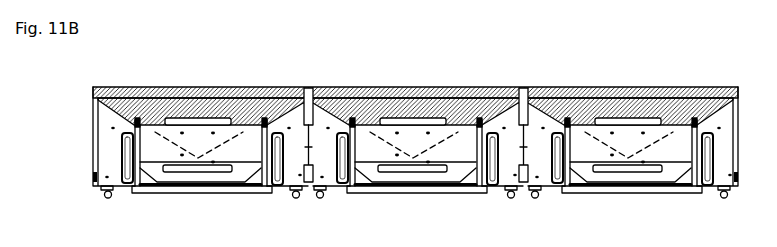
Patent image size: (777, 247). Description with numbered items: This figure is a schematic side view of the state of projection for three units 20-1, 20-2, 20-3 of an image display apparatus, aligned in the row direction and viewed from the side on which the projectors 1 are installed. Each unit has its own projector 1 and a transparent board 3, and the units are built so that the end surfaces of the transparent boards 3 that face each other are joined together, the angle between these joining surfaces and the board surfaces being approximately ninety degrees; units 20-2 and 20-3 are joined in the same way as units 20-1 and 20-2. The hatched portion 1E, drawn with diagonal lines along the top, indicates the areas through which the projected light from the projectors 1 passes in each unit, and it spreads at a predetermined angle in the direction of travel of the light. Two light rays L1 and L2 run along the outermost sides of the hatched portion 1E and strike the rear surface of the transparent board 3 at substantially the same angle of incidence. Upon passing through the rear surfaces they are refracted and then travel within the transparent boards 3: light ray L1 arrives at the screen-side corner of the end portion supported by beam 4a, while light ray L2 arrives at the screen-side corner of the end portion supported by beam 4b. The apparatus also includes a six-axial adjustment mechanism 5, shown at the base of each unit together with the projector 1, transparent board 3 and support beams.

The projector 1 is at (188, 168).
The hatched portion 1E is at (162, 88).
The transparent board 3 is at (93, 88).
The beam 4a is at (292, 117).
The beam 4b is at (93, 112).
The six-axial adjustment mechanism 5 is at (226, 193).
The unit 20-1 is at (171, 161).
The unit 20-2 is at (409, 160).
The unit 20-3 is at (621, 160).
The light ray L1 is at (294, 112).
The light ray L2 is at (114, 114).